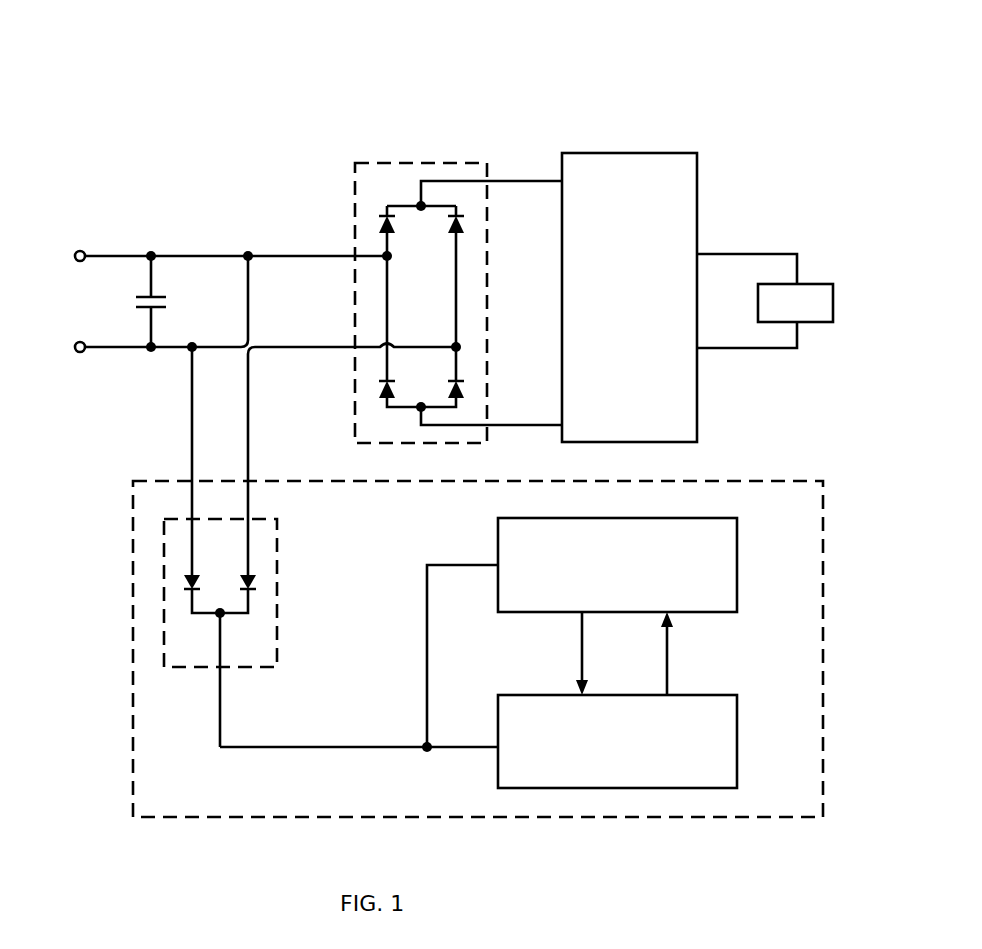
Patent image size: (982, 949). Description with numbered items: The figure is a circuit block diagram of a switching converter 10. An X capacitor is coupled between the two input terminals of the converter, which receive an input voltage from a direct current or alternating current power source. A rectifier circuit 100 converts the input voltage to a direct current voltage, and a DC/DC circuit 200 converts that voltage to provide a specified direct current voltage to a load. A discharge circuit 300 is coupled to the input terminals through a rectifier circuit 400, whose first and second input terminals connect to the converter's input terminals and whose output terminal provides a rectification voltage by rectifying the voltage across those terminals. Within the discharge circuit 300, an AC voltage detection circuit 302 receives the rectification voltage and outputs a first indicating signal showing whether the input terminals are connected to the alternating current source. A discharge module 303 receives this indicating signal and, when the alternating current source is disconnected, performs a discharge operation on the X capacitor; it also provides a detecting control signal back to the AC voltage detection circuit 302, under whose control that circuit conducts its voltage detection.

The switching converter 10 is at (717, 62).
The rectifier circuit 100 is at (455, 163).
The DC/DC circuit 200 is at (655, 153).
The discharge circuit 300 is at (725, 481).
The AC voltage detection circuit 302 is at (737, 578).
The discharge module 303 is at (737, 757).
The rectifier circuit 400 is at (277, 593).